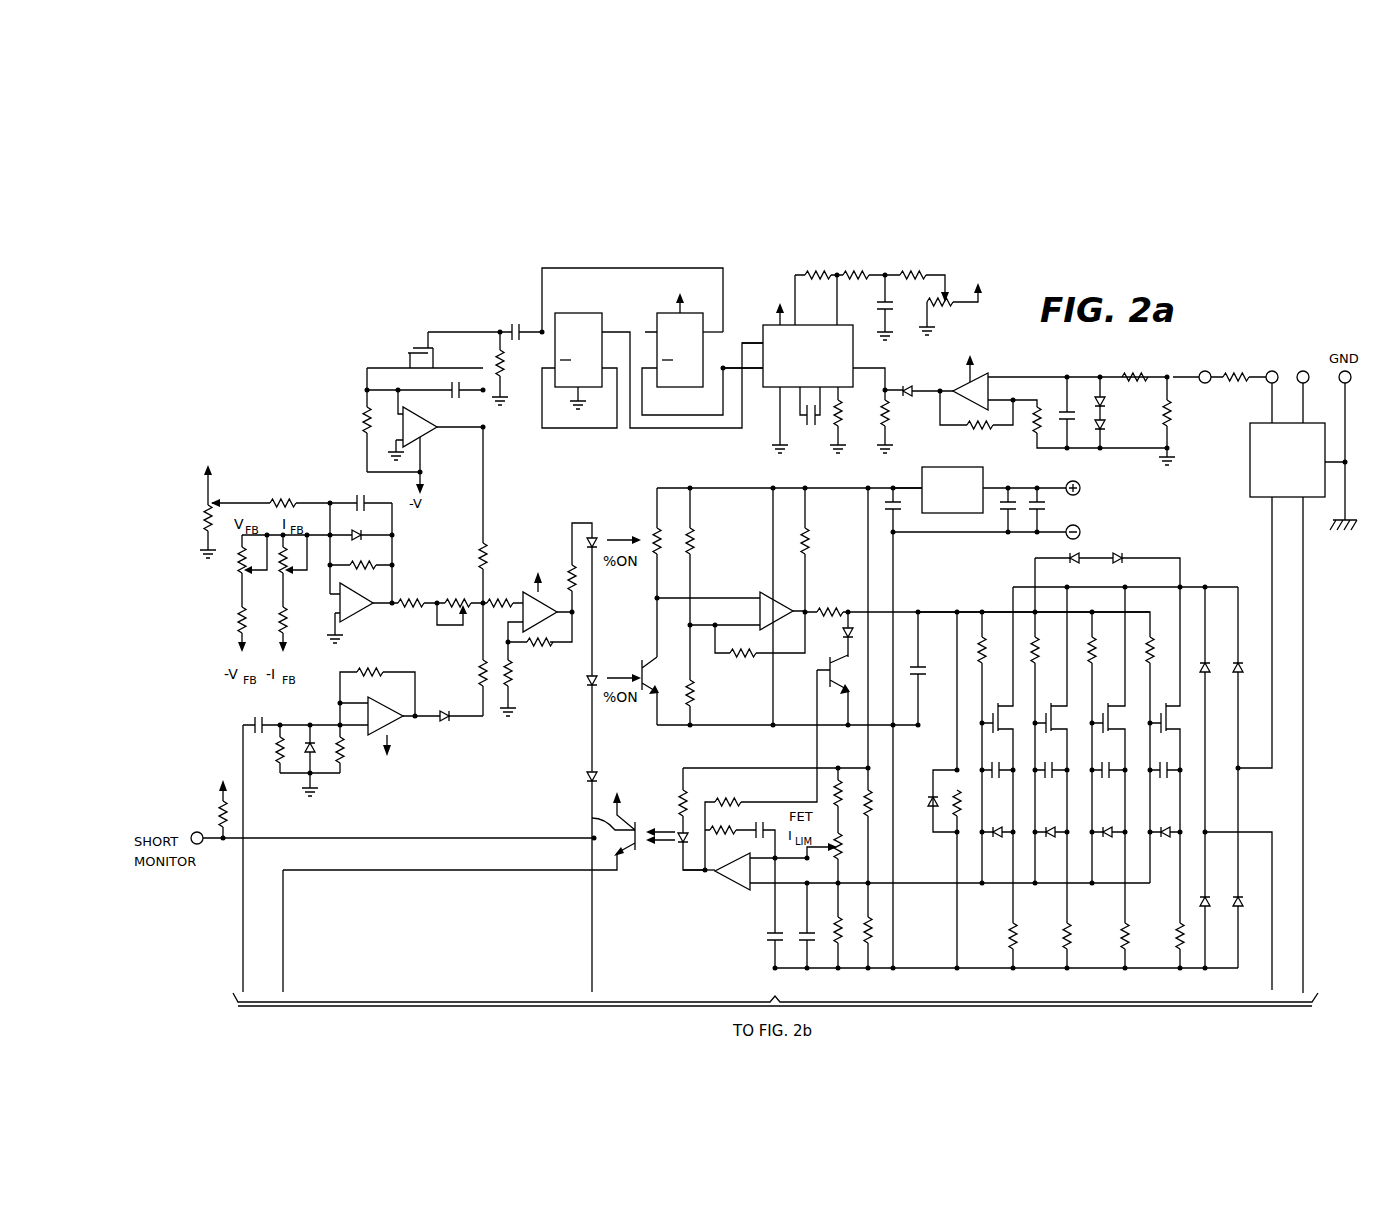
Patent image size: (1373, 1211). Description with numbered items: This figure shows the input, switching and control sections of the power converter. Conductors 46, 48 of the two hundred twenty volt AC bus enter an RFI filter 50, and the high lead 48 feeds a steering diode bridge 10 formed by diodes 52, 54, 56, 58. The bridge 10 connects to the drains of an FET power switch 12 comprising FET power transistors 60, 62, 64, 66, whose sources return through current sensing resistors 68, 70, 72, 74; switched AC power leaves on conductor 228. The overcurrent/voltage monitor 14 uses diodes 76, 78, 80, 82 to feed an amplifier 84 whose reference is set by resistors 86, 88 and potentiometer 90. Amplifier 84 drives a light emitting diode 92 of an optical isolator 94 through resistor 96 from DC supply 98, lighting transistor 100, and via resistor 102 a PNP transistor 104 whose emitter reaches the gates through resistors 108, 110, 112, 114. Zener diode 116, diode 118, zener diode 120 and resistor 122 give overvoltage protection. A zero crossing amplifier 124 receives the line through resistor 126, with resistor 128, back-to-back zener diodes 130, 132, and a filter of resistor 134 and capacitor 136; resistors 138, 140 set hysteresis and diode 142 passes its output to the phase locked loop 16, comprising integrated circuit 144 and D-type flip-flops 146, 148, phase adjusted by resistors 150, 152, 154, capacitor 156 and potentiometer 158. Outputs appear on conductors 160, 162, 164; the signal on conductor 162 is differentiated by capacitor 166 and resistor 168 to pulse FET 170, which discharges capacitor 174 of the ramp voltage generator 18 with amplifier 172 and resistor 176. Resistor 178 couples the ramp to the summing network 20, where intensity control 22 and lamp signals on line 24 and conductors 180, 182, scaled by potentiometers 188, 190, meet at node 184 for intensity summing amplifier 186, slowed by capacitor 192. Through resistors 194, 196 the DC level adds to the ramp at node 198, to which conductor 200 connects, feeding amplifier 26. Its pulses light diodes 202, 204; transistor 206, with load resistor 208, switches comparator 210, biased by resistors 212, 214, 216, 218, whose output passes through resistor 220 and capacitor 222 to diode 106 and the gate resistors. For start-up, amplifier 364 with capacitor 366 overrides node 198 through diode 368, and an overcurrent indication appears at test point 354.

The steering diode bridge 10 is at (1230, 759).
The FET power switch 12 is at (1021, 622).
The overcurrent/voltage monitor 14 is at (1100, 955).
The phase locked loop 16 is at (748, 294).
The ramp voltage generator 18 is at (393, 314).
The summing network 20 is at (426, 572).
The intensity control 22 is at (192, 509).
The line 24 is at (590, 958).
The amplifier 26 is at (546, 601).
The AC conductor 46 is at (1306, 403).
The high lead 48 is at (1268, 403).
The RFI filter 50 is at (1250, 436).
The diode 52 is at (1241, 673).
The diode 54 is at (1208, 673).
The diode 56 is at (1208, 908).
The diode 58 is at (1241, 908).
The FET power transistor 60 is at (1166, 730).
The FET power transistor 62 is at (1108, 730).
The FET power transistor 64 is at (1051, 730).
The FET power transistor 66 is at (998, 730).
The current sensing resistor 68 is at (1176, 935).
The current sensing resistor 70 is at (1121, 935).
The current sensing resistor 72 is at (1063, 935).
The current sensing resistor 74 is at (1009, 935).
The diode 76 is at (1163, 840).
The diode 78 is at (1105, 840).
The diode 80 is at (1048, 840).
The diode 82 is at (995, 840).
The amplifier 84 is at (742, 856).
The resistor 86 is at (841, 806).
The resistor 88 is at (841, 926).
The potentiometer 90 is at (841, 852).
The light emitting diode 92 is at (704, 872).
The optical isolator 94 is at (657, 824).
The current limiting resistor 96 is at (680, 792).
The internal DC supply 98 is at (924, 467).
The transistor 100 is at (592, 826).
The resistor 102 is at (725, 801).
The transistor 104 is at (817, 670).
The diode 106 is at (845, 632).
The resistor 108 is at (1153, 660).
The resistor 110 is at (1095, 660).
The resistor 112 is at (1038, 660).
The resistor 114 is at (985, 660).
The zener diode 116 is at (1124, 565).
The diode 118 is at (1077, 563).
The zener diode 120 is at (932, 806).
The resistor 122 is at (961, 806).
The zero crossing amplifier 124 is at (953, 386).
The resistor 126 is at (1222, 366).
The resistor 128 is at (1171, 408).
The zener diode 130 is at (1106, 401).
The zener diode 132 is at (1106, 428).
The resistor 134 is at (1129, 373).
The capacitor 136 is at (1065, 412).
The resistor 138 is at (971, 428).
The resistor 140 is at (1036, 430).
The diode 142 is at (907, 396).
The phase locked loop integrated circuit 144 is at (853, 335).
The D-type flip-flop 146 is at (660, 313).
The D-type flip-flop 148 is at (582, 313).
The resistor 150 is at (811, 275).
The resistor 152 is at (853, 275).
The resistor 154 is at (908, 275).
The capacitor 156 is at (881, 304).
The phase adjusting potentiometer 158 is at (933, 302).
The conductor 160 is at (727, 428).
The conductor 162 is at (540, 296).
The conductor 164 is at (648, 415).
The capacitor 166 is at (509, 326).
The resistor 168 is at (496, 360).
The FET 170 is at (406, 352).
The amplifier 172 is at (428, 412).
The capacitor 174 is at (462, 398).
The resistor 176 is at (362, 420).
The resistor 178 is at (486, 546).
The conductor 180 is at (238, 645).
The conductor 182 is at (280, 645).
The node 184 is at (355, 538).
The intensity summing amplifier 186 is at (361, 578).
The potentiometer 188 is at (240, 572).
The potentiometer 190 is at (289, 578).
The capacitor 192 is at (366, 496).
The resistor 194 is at (412, 602).
The resistor 196 is at (460, 598).
The node 198 is at (489, 603).
The conductor 200 is at (480, 640).
The light emitting diode 202 is at (588, 530).
The light emitting diode 204 is at (590, 682).
The transistor 206 is at (648, 660).
The load resistor 208 is at (653, 535).
The comparator 210 is at (760, 612).
The resistor 212 is at (695, 533).
The resistor 214 is at (697, 695).
The resistor 216 is at (810, 533).
The resistor 218 is at (748, 660).
The resistor 220 is at (832, 606).
The capacitor 222 is at (920, 662).
The conductor 228 is at (1270, 972).
The test point 354 is at (200, 831).
The amplifier 364 is at (401, 712).
The capacitor 366 is at (246, 723).
The diode 368 is at (481, 672).